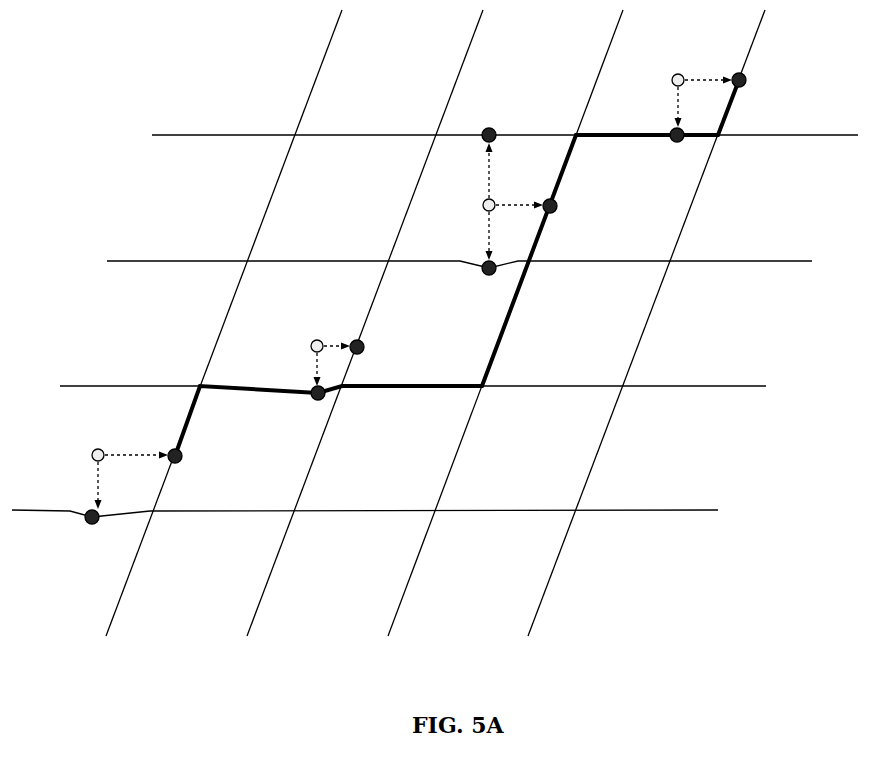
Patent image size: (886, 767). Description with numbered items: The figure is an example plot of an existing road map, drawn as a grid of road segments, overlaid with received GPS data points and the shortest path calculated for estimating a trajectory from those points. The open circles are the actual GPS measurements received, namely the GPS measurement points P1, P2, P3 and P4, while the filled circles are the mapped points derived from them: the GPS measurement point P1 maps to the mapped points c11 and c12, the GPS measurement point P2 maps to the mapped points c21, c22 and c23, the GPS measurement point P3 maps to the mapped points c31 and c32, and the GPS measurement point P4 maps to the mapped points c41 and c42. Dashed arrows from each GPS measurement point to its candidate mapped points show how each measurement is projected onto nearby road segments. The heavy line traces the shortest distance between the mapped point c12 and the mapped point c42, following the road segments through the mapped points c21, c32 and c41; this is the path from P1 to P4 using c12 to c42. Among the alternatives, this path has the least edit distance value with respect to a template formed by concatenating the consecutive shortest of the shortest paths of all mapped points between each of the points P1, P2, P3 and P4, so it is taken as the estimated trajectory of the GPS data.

The mapped point c11 is at (78, 540).
The mapped point c12 is at (188, 471).
The GPS measurement point P1 is at (112, 470).
The mapped point c21 is at (303, 409).
The mapped point c22 is at (374, 349).
The GPS measurement point P2 is at (319, 349).
The mapped point c23 is at (488, 119).
The mapped point c31 is at (479, 282).
The mapped point c32 is at (564, 216).
The GPS measurement point P3 is at (490, 201).
The mapped point c41 is at (666, 150).
The mapped point c42 is at (760, 88).
The GPS measurement point P4 is at (694, 87).